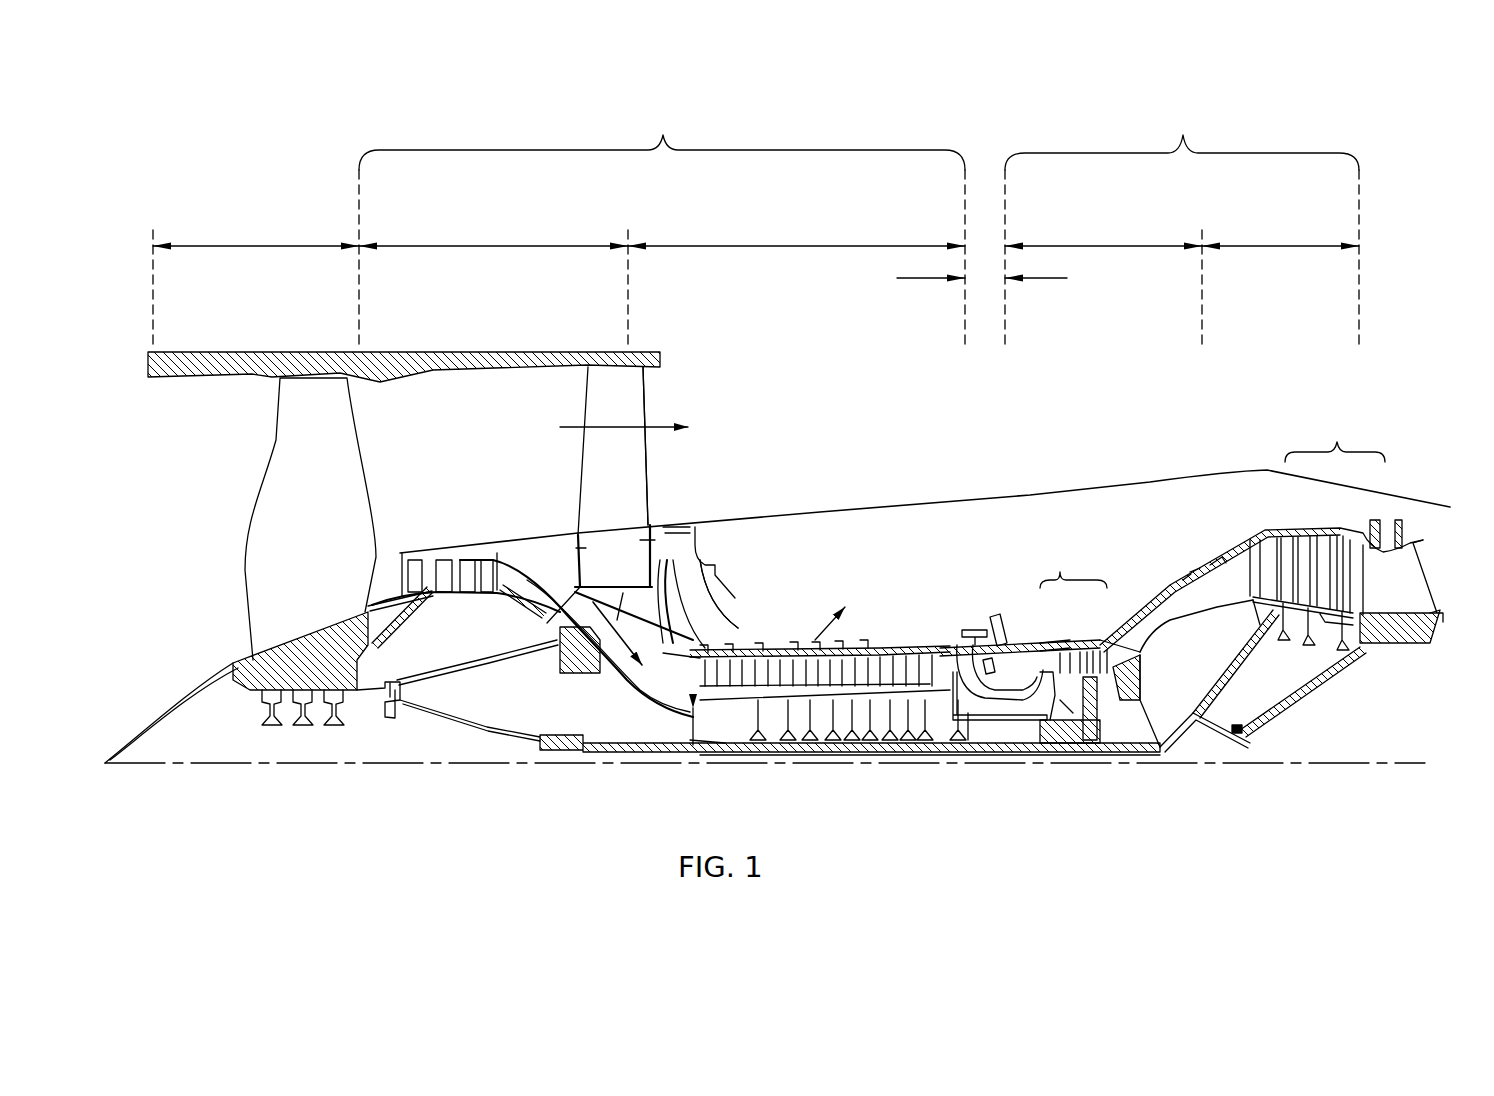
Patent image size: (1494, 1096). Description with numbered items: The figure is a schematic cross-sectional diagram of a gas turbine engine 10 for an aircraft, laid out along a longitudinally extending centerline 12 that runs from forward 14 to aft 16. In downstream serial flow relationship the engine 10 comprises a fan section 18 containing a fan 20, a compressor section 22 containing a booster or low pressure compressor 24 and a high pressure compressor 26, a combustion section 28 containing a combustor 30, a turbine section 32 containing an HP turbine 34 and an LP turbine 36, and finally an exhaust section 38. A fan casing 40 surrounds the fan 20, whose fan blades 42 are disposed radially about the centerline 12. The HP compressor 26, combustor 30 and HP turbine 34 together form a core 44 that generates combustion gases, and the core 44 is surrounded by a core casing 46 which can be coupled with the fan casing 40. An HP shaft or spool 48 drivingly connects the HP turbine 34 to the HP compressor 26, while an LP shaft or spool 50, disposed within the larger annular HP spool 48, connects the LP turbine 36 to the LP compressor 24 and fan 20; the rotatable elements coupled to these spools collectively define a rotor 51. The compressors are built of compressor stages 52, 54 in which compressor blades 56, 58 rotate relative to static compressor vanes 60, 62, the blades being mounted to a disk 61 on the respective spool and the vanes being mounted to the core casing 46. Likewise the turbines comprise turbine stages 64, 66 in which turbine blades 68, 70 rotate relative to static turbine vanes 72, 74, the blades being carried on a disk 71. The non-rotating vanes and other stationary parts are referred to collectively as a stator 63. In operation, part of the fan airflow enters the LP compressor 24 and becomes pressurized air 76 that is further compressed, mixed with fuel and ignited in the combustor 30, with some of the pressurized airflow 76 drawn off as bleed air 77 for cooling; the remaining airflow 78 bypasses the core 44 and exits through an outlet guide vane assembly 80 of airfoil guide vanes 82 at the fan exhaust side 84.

The gas turbine engine 10 is at (1378, 270).
The centerline 12 is at (233, 765).
The forward 14 is at (173, 473).
The aft 16 is at (1450, 573).
The fan section 18 is at (255, 243).
The fan 20 is at (222, 608).
The compressor section 22 is at (663, 135).
The low pressure compressor 24 is at (500, 243).
The high pressure compressor 26 is at (798, 243).
The combustion section 28 is at (897, 278).
The combustor 30 is at (1008, 662).
The turbine section 32 is at (1183, 135).
The HP turbine 34 is at (1103, 243).
The LP turbine 36 is at (1277, 243).
The exhaust section 38 is at (1452, 517).
The fan casing 40 is at (392, 351).
The fan blades 42 is at (328, 415).
The core 44 is at (928, 530).
The core casing 46 is at (1187, 580).
The HP shaft or spool 48 is at (968, 713).
The LP shaft or spool 50 is at (560, 748).
The rotor 51 is at (823, 752).
The compressor stages 52 is at (410, 458).
The compressor stages 54 is at (790, 598).
The compressor blades 56 is at (437, 567).
The compressor blades 58 is at (723, 663).
The static compressor vanes 60 is at (413, 562).
The disk 61 is at (455, 595).
The static compressor vanes 62 is at (700, 643).
The stator 63 is at (693, 745).
The turbine stages 64 is at (1060, 572).
The turbine stages 66 is at (1337, 442).
The turbine blades 68 is at (1055, 667).
The turbine blades 70 is at (1347, 537).
The disk 71 is at (1073, 713).
The static turbine vanes 72 is at (1048, 657).
The static turbine vanes 74 is at (1323, 545).
The pressurized air 76 is at (596, 652).
The bleed air 77 is at (815, 640).
The airflow 78 is at (560, 427).
The outlet guide vane assembly 80 is at (655, 490).
The airfoil guide vanes 82 is at (593, 465).
The fan exhaust side 84 is at (665, 402).